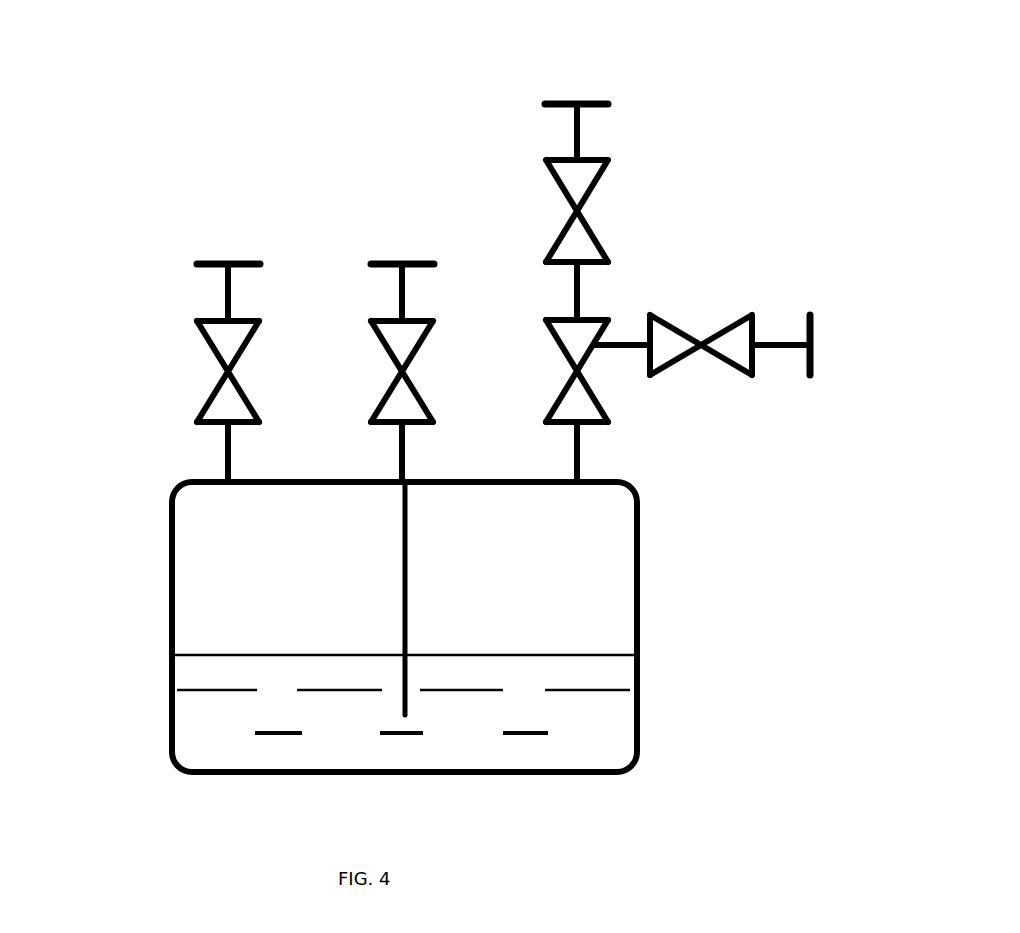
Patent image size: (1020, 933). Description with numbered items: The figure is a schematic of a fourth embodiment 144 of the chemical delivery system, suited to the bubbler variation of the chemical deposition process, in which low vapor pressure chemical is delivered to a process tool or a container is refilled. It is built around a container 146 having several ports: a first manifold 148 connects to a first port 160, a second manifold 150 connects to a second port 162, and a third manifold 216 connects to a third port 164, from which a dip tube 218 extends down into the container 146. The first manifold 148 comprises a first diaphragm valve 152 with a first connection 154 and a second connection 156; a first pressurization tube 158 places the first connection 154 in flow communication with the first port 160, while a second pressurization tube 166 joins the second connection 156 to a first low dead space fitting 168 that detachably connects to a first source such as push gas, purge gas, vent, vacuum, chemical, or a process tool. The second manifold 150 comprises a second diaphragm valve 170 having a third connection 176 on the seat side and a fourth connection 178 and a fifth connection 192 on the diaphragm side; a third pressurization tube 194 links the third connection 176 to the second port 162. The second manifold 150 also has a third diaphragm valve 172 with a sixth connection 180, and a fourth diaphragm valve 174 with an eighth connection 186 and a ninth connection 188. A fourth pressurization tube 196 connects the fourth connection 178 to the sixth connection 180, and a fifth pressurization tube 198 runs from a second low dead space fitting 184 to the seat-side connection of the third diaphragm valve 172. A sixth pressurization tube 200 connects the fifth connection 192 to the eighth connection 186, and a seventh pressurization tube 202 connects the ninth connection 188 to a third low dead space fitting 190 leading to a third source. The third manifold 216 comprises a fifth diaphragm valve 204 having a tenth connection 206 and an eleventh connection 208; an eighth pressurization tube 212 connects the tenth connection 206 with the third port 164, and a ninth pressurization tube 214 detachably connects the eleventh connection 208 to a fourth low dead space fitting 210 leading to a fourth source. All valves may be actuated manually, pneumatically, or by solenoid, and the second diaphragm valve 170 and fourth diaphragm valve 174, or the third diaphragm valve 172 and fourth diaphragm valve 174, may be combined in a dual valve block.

The fourth embodiment 144 is at (404, 38).
The container 146 is at (172, 630).
The first manifold 148 is at (138, 162).
The second manifold 150 is at (648, 119).
The first diaphragm valve 152 is at (165, 368).
The first connection 154 is at (207, 428).
The second connection 156 is at (220, 322).
The first pressurization tube 158 is at (225, 455).
The first port 160 is at (235, 488).
The second port 162 is at (575, 485).
The third port 164 is at (408, 488).
The second pressurization tube 166 is at (232, 294).
The first low dead space fitting 168 is at (228, 264).
The second diaphragm valve 170 is at (520, 373).
The third diaphragm valve 172 is at (521, 223).
The fourth diaphragm valve 174 is at (740, 346).
The third connection 176 is at (555, 424).
The fourth connection 178 is at (548, 320).
The sixth connection 180 is at (563, 265).
The second low dead space fitting 184 is at (573, 102).
The eighth connection 186 is at (648, 362).
The ninth connection 188 is at (757, 362).
The third low dead space fitting 190 is at (813, 347).
The fifth connection 192 is at (570, 158).
The third pressurization tube 194 is at (582, 462).
The fourth pressurization tube 196 is at (580, 288).
The fifth pressurization tube 198 is at (573, 130).
The sixth pressurization tube 200 is at (622, 340).
The seventh pressurization tube 202 is at (780, 340).
The fifth diaphragm valve 204 is at (359, 369).
The tenth connection 206 is at (388, 428).
The eleventh connection 208 is at (398, 320).
The fourth low dead space fitting 210 is at (395, 262).
The eighth pressurization tube 212 is at (398, 455).
The second valve stem 214 is at (398, 290).
The third manifold 216 is at (365, 217).
The dip tube 218 is at (408, 597).